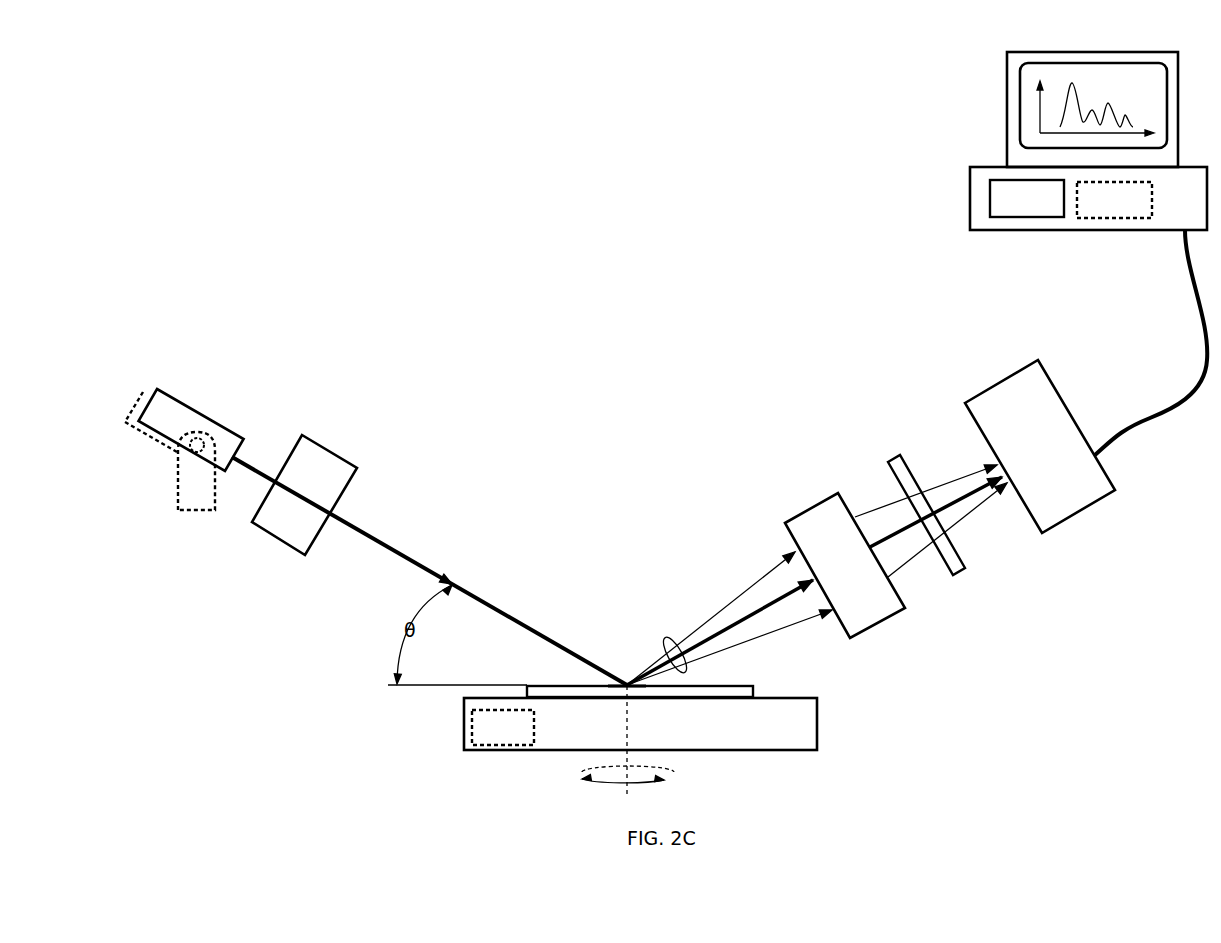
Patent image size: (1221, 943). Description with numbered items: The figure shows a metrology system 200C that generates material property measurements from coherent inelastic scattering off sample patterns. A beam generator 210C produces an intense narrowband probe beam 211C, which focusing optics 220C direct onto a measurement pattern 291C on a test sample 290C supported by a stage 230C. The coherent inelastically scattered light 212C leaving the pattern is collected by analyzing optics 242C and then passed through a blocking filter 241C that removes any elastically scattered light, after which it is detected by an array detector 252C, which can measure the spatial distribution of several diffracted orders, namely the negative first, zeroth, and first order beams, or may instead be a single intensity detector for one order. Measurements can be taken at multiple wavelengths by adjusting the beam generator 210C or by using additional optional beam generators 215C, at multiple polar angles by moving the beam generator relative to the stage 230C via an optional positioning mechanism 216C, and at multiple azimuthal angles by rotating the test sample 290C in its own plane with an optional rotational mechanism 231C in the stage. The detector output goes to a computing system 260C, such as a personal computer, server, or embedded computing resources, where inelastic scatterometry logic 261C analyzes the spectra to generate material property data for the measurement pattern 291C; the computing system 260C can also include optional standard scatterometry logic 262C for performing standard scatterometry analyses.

The metrology system 200C is at (230, 169).
The beam generator 210C is at (193, 406).
The probe beam 211C is at (405, 565).
The coherent inelastically scattered light 212C is at (668, 648).
The additional optional beam generators 215C is at (128, 413).
The optional positioning mechanism 216C is at (200, 512).
The focusing optics 220C is at (277, 540).
The stage 230C is at (640, 724).
The optional rotational mechanism 231C is at (503, 727).
The blocking filter 241C is at (890, 458).
The analyzing optics 242C is at (880, 625).
The array detector 252C is at (1080, 518).
The computing system 260C is at (1008, 120).
The inelastic scatterometry logic 261C is at (1020, 218).
The standard scatterometry logic 262C is at (1142, 218).
The test sample 290C is at (523, 691).
The measurement pattern 291C is at (627, 690).